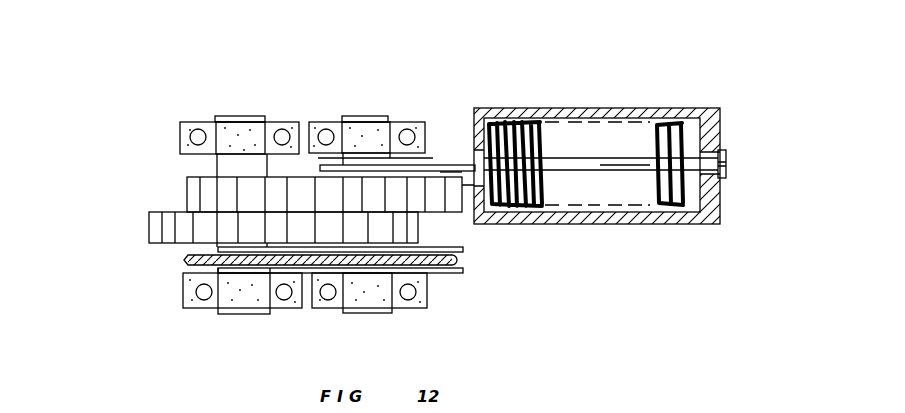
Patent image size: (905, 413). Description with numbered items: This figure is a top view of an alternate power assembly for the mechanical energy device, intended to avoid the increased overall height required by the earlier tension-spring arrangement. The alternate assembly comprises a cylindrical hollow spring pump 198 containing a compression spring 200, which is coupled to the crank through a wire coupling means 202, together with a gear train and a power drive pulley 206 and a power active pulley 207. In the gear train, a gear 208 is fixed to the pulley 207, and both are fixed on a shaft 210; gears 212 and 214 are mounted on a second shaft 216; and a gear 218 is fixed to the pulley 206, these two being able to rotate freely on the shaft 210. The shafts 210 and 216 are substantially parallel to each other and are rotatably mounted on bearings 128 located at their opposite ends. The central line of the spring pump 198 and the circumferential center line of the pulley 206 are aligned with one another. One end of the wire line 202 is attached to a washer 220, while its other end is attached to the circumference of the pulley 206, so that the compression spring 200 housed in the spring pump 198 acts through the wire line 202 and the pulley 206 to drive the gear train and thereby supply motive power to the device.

The bearings 128 is at (196, 133).
The cylindrical hollow spring pump 198 is at (658, 226).
The compression spring 200 is at (527, 123).
The wire coupling means 202 is at (184, 265).
The power drive pulley 206 is at (372, 168).
The power active pulley 207 is at (445, 272).
The gear 208 is at (415, 228).
The shaft 210 is at (362, 117).
The gear 212 is at (150, 228).
The gear 214 is at (187, 192).
The shaft 216 is at (238, 118).
The gear 218 is at (462, 185).
The washer 220 is at (712, 200).